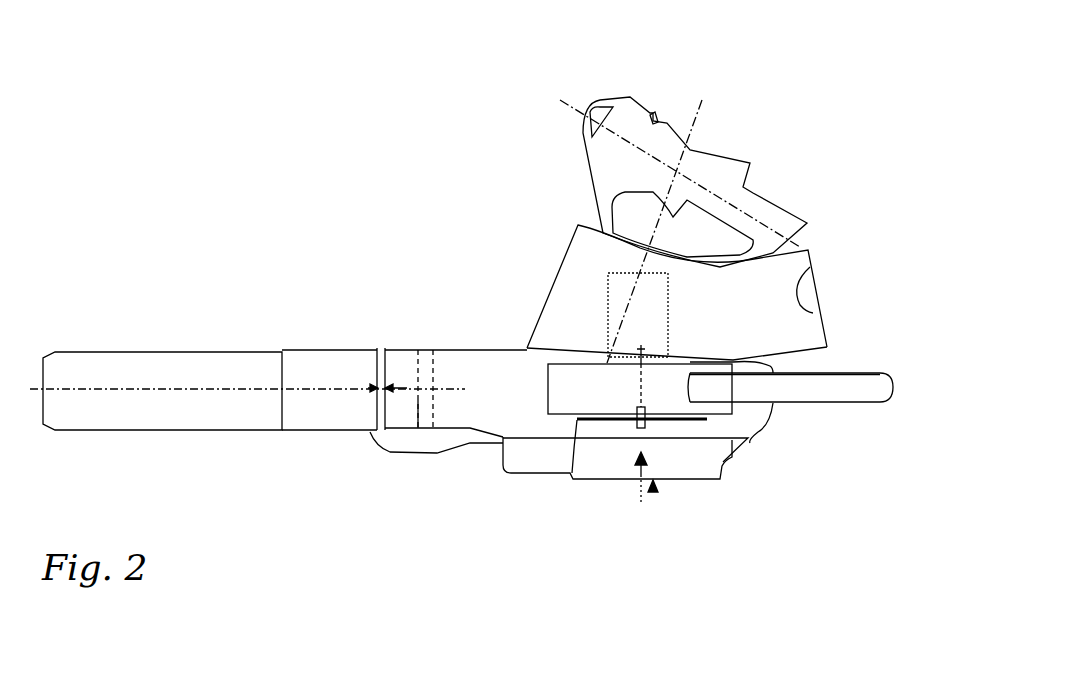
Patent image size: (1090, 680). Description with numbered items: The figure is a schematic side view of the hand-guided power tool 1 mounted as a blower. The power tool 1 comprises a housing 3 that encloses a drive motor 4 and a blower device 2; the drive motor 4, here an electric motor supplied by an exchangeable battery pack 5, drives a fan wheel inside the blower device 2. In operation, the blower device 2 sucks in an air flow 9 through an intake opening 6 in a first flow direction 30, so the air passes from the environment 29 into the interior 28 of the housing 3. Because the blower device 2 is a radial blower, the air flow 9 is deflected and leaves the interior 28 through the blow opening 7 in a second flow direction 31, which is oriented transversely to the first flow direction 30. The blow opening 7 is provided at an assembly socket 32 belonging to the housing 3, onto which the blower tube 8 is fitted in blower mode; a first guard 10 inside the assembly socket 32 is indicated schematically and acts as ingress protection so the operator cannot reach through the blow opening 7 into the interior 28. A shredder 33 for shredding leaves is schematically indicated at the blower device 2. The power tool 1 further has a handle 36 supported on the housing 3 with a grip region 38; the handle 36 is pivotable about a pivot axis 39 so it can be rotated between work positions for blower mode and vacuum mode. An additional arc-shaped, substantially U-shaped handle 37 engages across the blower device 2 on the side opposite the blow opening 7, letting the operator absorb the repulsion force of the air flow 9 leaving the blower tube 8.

The power tool 1 is at (443, 158).
The blower device 2 is at (723, 417).
The housing 3 is at (533, 327).
The drive motor 4 is at (608, 293).
The battery pack 5 is at (817, 281).
The intake opening 6 is at (655, 487).
The blow opening 7 is at (370, 385).
The blower tube 8 is at (153, 430).
The air flow 9 is at (300, 392).
The first guard 10 is at (417, 414).
The interior 28 is at (624, 386).
The environment 29 is at (841, 530).
The first flow direction 30 is at (637, 476).
The second flow direction 31 is at (400, 380).
The assembly socket 32 is at (433, 347).
The shredder 33 is at (570, 473).
The handle 36 is at (632, 95).
The arc-shaped handle 37 is at (880, 373).
The grip region 38 is at (750, 190).
The pivot axis 39 is at (700, 107).